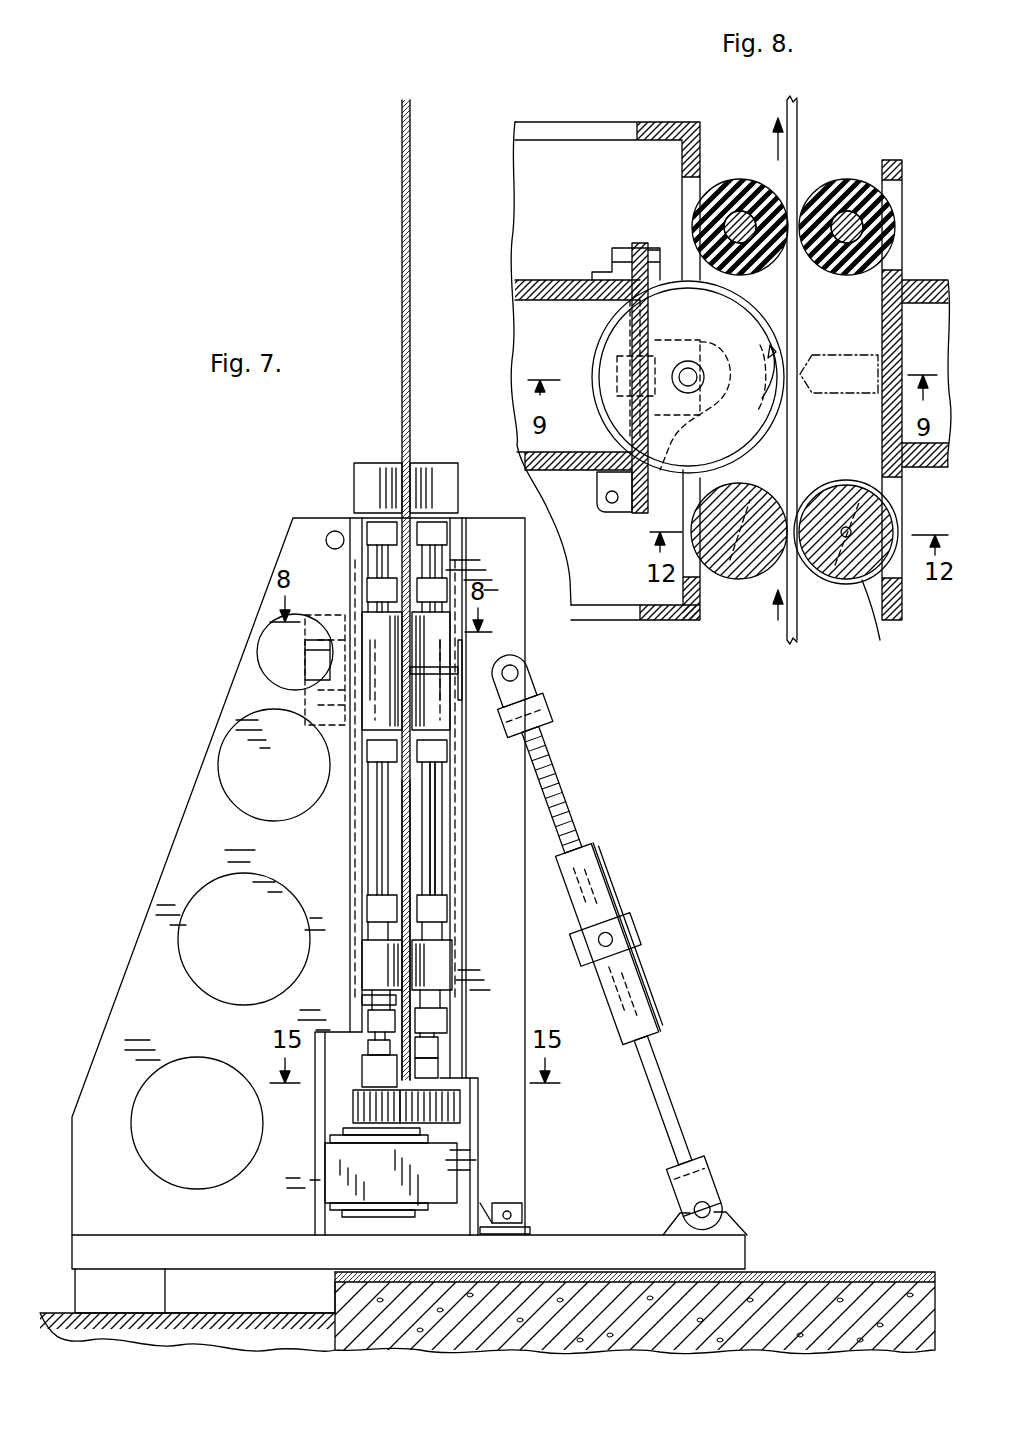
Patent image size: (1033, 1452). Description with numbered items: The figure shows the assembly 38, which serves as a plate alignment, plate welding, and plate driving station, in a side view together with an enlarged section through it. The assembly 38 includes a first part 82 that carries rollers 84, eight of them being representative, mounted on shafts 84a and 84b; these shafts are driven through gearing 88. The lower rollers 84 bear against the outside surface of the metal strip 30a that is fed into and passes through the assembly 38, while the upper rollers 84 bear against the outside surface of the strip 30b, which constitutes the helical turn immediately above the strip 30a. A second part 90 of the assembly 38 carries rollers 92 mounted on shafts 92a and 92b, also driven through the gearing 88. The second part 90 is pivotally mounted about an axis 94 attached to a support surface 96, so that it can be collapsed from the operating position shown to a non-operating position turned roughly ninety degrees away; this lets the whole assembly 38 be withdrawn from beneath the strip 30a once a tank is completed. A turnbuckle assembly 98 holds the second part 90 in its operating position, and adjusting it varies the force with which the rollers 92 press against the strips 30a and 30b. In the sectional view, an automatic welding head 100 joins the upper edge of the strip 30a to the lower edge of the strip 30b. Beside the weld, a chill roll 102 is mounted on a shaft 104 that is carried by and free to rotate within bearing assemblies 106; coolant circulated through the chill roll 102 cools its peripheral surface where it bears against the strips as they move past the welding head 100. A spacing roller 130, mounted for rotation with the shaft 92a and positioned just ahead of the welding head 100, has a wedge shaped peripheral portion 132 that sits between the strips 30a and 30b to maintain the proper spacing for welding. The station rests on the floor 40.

In FIG. 7, the metal strip 30a is at (411, 818).
In FIG. 7, the strip constituting the helical turn 30b is at (411, 410).
In FIG. 7, the assembly 38 is at (212, 730).
In FIG. 7, the concrete floor 40 is at (748, 1340).
In FIG. 7, the first part 82 is at (128, 972).
In FIG. 8, the first part 82 is at (690, 122).
In FIG. 7, the rollers 84 is at (368, 478).
In FIG. 8, the rollers 84 is at (736, 205).
In FIG. 7, the shaft 84a is at (375, 1000).
In FIG. 8, the shaft 84a is at (748, 580).
In FIG. 8, the shaft 84b is at (748, 215).
In FIG. 7, the gearing 88 is at (452, 1162).
In FIG. 7, the second part 90 is at (510, 612).
In FIG. 8, the second part 90 is at (892, 164).
In FIG. 7, the rollers 92 is at (442, 470).
In FIG. 8, the rollers 92 is at (880, 220).
In FIG. 7, the shaft 92a is at (432, 872).
In FIG. 8, the shaft 92a is at (835, 590).
In FIG. 8, the shaft 92b is at (852, 185).
In FIG. 7, the axis 94 is at (522, 1210).
In FIG. 7, the support surface 96 is at (636, 1252).
In FIG. 7, the turnbuckle assembly 98 is at (612, 912).
In FIG. 8, the automatic welding head 100 is at (858, 360).
In FIG. 7, the chill roll 102 is at (305, 662).
In FIG. 8, the chill roll 102 is at (768, 330).
In FIG. 8, the shaft 104 is at (700, 370).
In FIG. 8, the bearing assemblies 106 is at (710, 425).
In FIG. 7, the roller 130 is at (442, 700).
In FIG. 8, the roller 130 is at (855, 495).
In FIG. 7, the wedge shaped peripheral portion 132 is at (442, 672).
In FIG. 8, the wedge shaped peripheral portion 132 is at (880, 640).